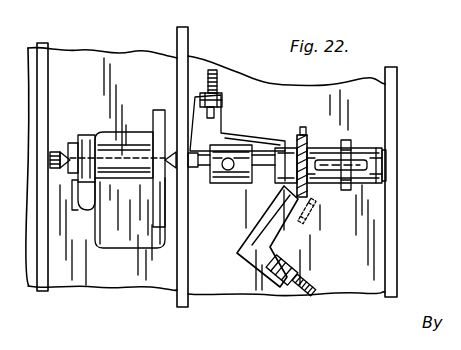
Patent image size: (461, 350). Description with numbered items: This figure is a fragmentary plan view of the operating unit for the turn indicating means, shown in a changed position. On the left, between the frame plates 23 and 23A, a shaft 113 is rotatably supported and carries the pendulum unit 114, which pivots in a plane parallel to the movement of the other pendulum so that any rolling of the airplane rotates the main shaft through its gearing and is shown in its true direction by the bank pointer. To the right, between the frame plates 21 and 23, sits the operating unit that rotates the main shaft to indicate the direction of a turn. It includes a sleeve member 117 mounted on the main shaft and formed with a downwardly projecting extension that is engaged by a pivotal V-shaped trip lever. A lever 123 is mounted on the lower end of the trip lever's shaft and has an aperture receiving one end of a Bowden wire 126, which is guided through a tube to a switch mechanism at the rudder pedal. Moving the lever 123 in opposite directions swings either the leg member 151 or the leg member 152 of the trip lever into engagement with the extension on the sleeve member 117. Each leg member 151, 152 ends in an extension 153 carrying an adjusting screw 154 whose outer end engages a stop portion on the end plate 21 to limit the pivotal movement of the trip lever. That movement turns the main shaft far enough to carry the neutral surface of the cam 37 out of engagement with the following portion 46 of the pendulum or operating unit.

The frame plate 21 is at (392, 105).
The frame plate 23 is at (188, 48).
The frame plate 23A is at (48, 65).
The cam 37 is at (347, 138).
The following portion 46 is at (367, 165).
The shaft 113 is at (157, 180).
The pendulum unit 114 is at (135, 134).
The sleeve member 117 is at (213, 184).
The lever 123 is at (313, 202).
The Bowden wire 126 is at (302, 218).
The leg member 151 is at (250, 136).
The leg member 152 is at (268, 218).
The extension 153 is at (250, 88).
The adjusting screw 154 is at (226, 56).